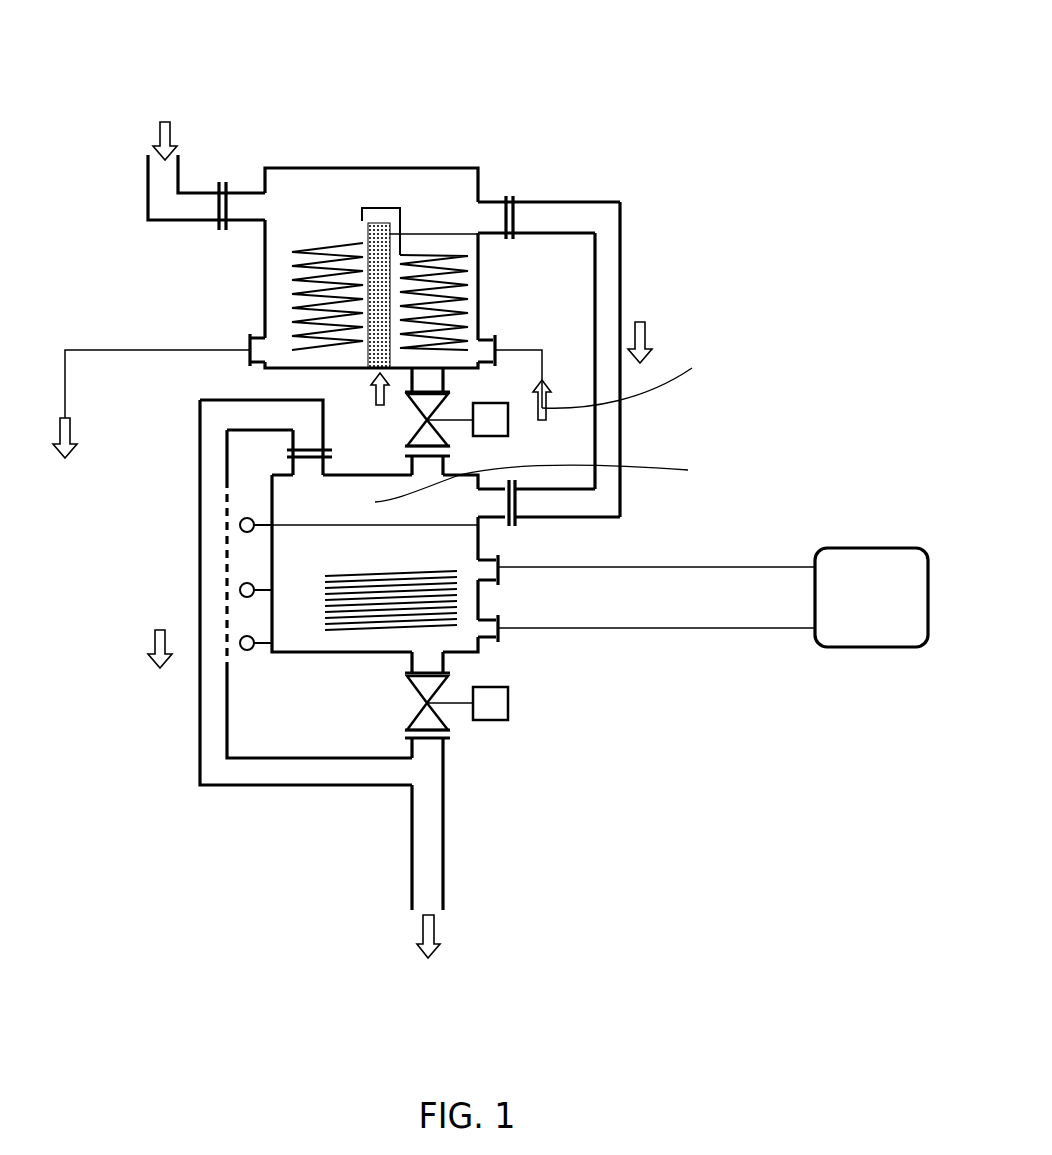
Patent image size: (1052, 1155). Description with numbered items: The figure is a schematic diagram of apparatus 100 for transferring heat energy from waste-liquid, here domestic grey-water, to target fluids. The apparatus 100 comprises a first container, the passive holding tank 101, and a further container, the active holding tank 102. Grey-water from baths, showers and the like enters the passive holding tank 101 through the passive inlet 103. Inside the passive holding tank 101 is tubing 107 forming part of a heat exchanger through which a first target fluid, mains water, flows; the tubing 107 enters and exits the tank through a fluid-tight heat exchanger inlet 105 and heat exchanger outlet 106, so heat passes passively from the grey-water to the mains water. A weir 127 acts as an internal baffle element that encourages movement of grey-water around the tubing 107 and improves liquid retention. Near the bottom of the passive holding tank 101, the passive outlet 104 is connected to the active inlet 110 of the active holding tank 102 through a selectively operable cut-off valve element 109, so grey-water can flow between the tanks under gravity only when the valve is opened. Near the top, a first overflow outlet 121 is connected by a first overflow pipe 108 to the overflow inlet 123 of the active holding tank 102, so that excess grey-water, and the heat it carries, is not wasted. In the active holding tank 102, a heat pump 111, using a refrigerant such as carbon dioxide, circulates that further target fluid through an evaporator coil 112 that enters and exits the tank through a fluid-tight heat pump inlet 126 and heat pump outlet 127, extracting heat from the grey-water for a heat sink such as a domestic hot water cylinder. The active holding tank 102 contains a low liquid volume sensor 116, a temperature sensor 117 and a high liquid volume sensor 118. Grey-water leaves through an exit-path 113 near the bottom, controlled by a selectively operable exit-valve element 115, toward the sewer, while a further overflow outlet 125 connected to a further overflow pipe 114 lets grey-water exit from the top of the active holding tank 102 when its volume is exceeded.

The apparatus 100 is at (655, 116).
The passive holding tank 101 is at (468, 177).
The active holding tank 102 is at (307, 640).
The passive inlet 103 is at (250, 191).
The passive outlet 104 is at (470, 347).
The heat exchanger inlet 105 is at (490, 353).
The heat exchanger outlet 106 is at (250, 346).
The tubing 107 is at (435, 260).
The first overflow pipe 108 is at (620, 315).
The cut-off valve element 109 is at (440, 423).
The active inlet 110 is at (330, 438).
The heat pump 111 is at (848, 550).
The evaporator coil 112 is at (447, 622).
The exit-path 113 is at (412, 662).
The further overflow pipe 114 is at (213, 717).
The exit-valve element 115 is at (508, 705).
The low liquid volume sensor 116 is at (240, 645).
The temperature sensor 117 is at (240, 591).
The high liquid volume sensor 118 is at (241, 530).
The first overflow outlet 121 is at (493, 222).
The overflow inlet 123 is at (508, 523).
The further overflow outlet 125 is at (293, 465).
The heat pump inlet 126 is at (500, 567).
The weir 127 is at (378, 207).